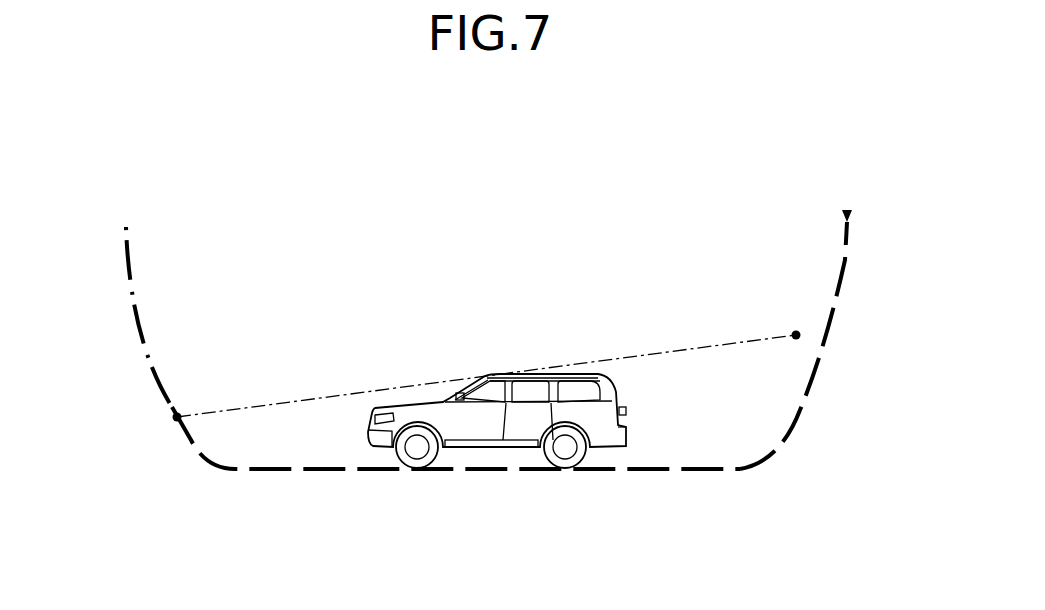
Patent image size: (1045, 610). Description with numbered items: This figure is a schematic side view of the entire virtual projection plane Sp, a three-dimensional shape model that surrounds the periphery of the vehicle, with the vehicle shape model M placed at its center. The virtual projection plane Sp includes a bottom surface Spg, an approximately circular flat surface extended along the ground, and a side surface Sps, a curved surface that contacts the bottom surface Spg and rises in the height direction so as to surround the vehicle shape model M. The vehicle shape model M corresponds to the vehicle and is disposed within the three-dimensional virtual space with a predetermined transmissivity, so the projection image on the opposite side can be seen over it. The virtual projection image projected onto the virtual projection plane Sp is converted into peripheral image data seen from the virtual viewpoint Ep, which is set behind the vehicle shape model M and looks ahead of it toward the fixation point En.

The side surface Sps is at (125, 268).
The bottom surface Spg is at (515, 473).
The virtual projection plane Sp is at (850, 208).
The fixation point En is at (178, 414).
The virtual viewpoint Ep is at (796, 335).
The vehicle shape model M is at (573, 393).